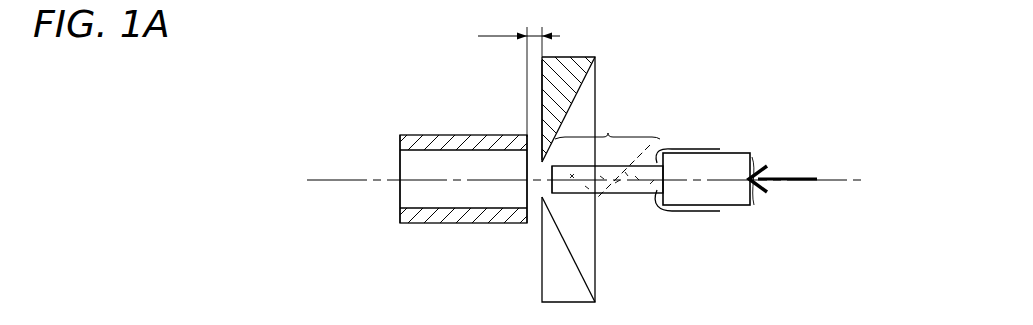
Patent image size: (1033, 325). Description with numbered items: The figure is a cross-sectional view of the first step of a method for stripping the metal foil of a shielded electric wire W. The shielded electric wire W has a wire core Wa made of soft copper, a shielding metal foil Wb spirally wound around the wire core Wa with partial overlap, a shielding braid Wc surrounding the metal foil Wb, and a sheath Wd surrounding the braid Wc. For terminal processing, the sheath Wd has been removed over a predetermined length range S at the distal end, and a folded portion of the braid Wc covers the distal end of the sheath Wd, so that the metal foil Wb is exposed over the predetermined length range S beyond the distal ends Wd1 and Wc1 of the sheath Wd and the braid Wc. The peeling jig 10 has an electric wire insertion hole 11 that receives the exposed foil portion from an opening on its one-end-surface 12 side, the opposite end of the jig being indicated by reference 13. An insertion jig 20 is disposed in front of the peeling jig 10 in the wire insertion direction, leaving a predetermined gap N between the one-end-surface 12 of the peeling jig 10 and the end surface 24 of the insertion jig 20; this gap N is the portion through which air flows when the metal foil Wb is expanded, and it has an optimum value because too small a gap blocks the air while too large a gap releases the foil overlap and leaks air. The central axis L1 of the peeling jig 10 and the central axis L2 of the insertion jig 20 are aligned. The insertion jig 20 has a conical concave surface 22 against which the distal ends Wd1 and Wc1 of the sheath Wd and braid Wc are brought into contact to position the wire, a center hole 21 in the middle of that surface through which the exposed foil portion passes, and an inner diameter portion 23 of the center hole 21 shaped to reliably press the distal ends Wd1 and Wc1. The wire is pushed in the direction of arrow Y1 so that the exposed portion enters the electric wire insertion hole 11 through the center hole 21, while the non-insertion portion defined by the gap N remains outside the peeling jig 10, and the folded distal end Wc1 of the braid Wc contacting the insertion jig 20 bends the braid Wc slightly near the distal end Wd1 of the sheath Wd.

The peeling jig 10 is at (432, 136).
The electric wire insertion hole 11 is at (405, 207).
The one-end-surface 12 is at (528, 136).
The base end of guide pipe 13 is at (401, 142).
The insertion jig 20 is at (567, 57).
The center hole 21 is at (548, 180).
The conical concave surface 22 is at (577, 101).
The inner diameter portion 23 is at (544, 198).
The end surface 24 is at (543, 98).
The predetermined gap N is at (519, 73).
The predetermined length range S is at (607, 123).
The central axis of the peeling jig L1 is at (331, 183).
The central axis of the insertion jig L2 is at (650, 145).
The shielded electric wire W is at (751, 210).
The wire core Wa is at (604, 194).
The metal foil Wb is at (617, 195).
The braid Wc is at (708, 147).
The distal end of the braid Wc1 is at (655, 202).
The sheath Wd is at (752, 154).
The distal end of the sheath Wd1 is at (634, 195).
The arrow Y1 is at (800, 180).